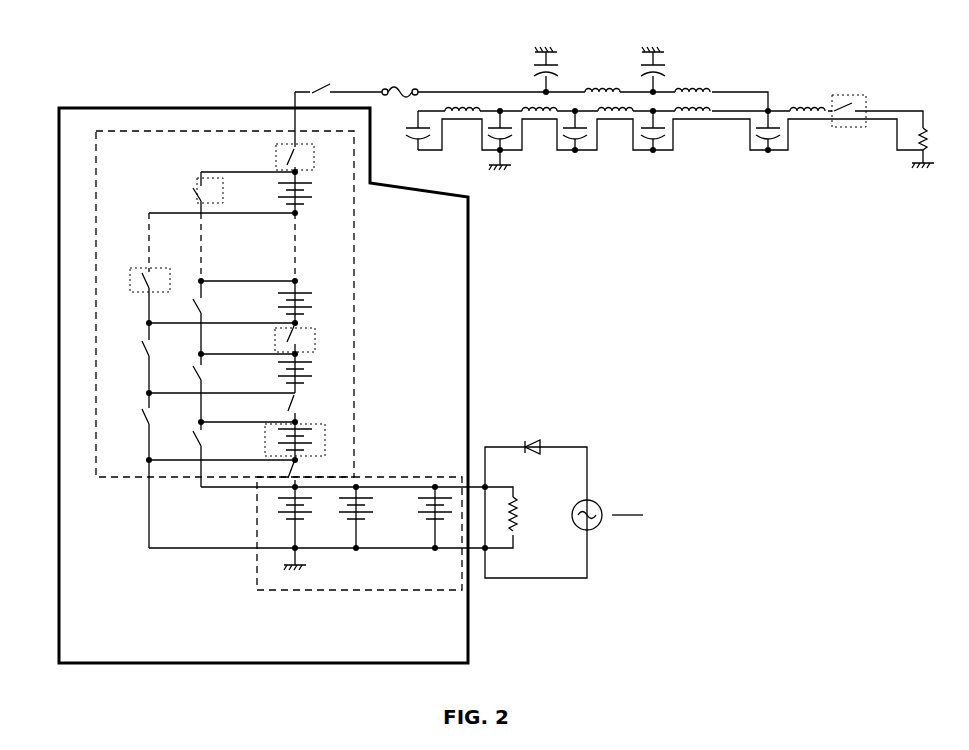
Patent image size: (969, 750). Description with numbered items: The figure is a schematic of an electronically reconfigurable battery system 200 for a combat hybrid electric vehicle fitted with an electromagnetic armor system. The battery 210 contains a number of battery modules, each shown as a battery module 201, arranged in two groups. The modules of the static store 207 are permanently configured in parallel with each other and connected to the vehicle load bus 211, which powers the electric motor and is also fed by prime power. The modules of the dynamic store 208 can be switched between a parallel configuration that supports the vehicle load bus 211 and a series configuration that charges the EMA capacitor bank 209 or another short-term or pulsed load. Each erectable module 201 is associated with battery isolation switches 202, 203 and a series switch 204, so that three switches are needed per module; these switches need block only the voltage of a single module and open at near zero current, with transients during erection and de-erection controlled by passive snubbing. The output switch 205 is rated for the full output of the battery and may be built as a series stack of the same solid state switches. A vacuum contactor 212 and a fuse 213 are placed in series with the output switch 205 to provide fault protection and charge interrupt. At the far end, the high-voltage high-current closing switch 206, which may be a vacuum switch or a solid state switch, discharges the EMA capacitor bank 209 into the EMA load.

The electronically reconfigurable battery system 200 is at (477, 339).
The battery module 201 is at (323, 451).
The battery isolation switch 202 is at (187, 201).
The battery isolation switch 203 is at (134, 282).
The series switch 204 is at (328, 327).
The output switch 205 is at (308, 157).
The high-voltage high-current closing switch 206 is at (848, 97).
The static store 207 is at (353, 590).
The dynamic store 208 is at (96, 235).
The EMA capacitor bank 209 is at (575, 150).
The electronically reconfigurable battery 210 is at (447, 320).
The vehicle load bus 211 is at (552, 485).
The vacuum contactor 212 is at (325, 82).
The fuse 213 is at (403, 82).